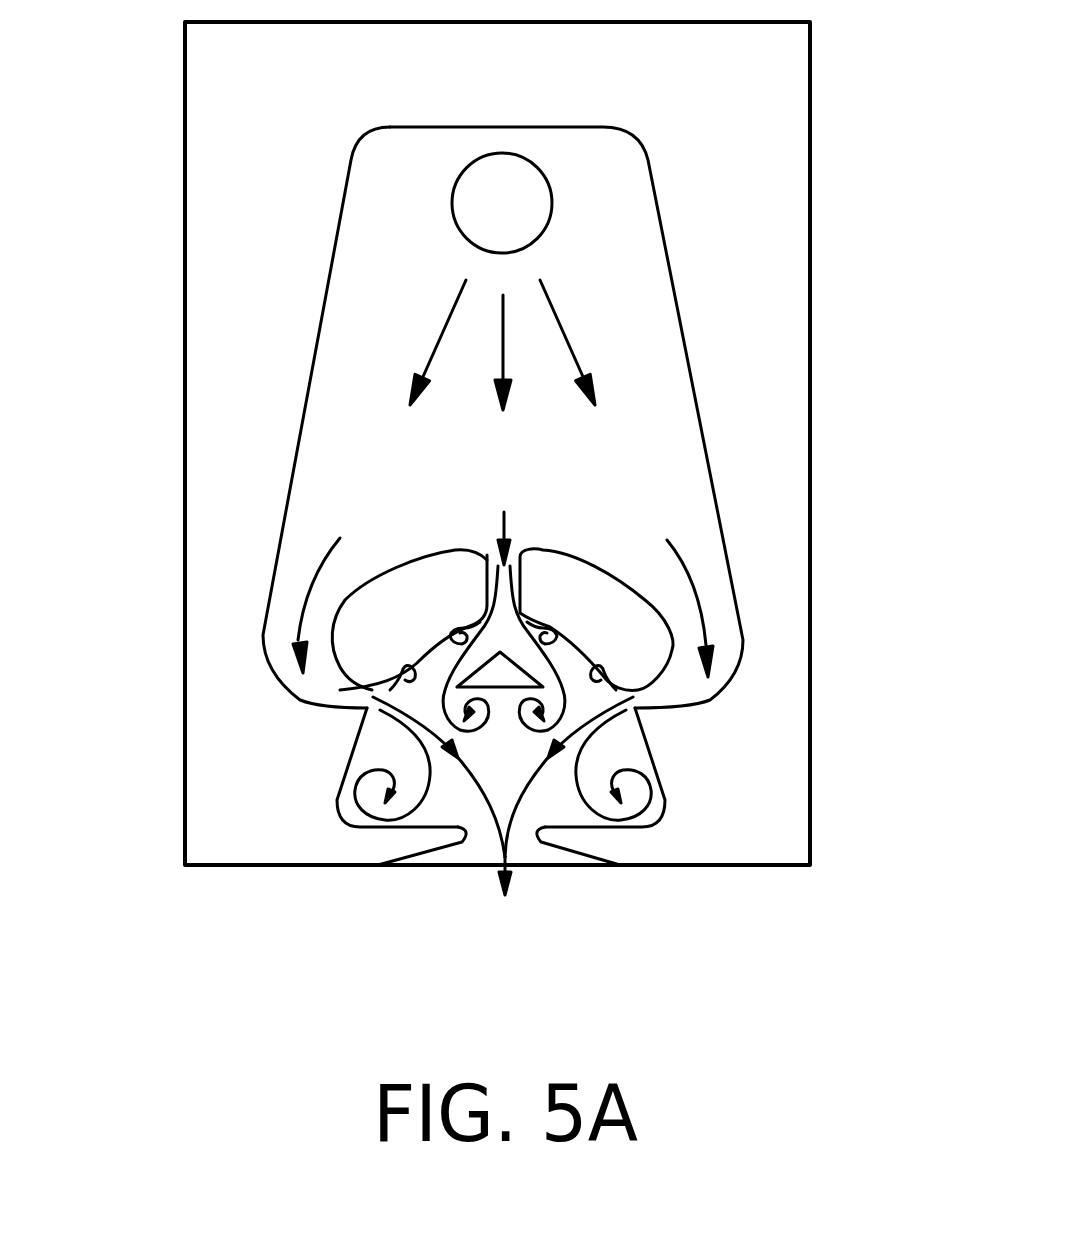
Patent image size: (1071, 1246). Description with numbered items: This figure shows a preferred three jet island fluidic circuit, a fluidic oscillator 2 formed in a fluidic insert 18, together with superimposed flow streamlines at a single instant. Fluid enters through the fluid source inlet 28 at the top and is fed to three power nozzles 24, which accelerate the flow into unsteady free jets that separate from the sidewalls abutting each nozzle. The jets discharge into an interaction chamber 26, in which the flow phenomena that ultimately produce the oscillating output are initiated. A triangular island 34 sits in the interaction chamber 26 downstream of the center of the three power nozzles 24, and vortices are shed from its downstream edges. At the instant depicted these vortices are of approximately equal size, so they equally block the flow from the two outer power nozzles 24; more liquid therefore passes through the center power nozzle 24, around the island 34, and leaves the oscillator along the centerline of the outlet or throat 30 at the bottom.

The fluidic insert 18 is at (185, 228).
The fluidic oscillator 2 is at (555, 490).
The fluid source inlet 28 is at (523, 203).
The power nozzle 24 is at (487, 556).
The island 34 is at (510, 667).
The interaction chamber 26 is at (610, 762).
The fluid outlet 30 is at (520, 833).